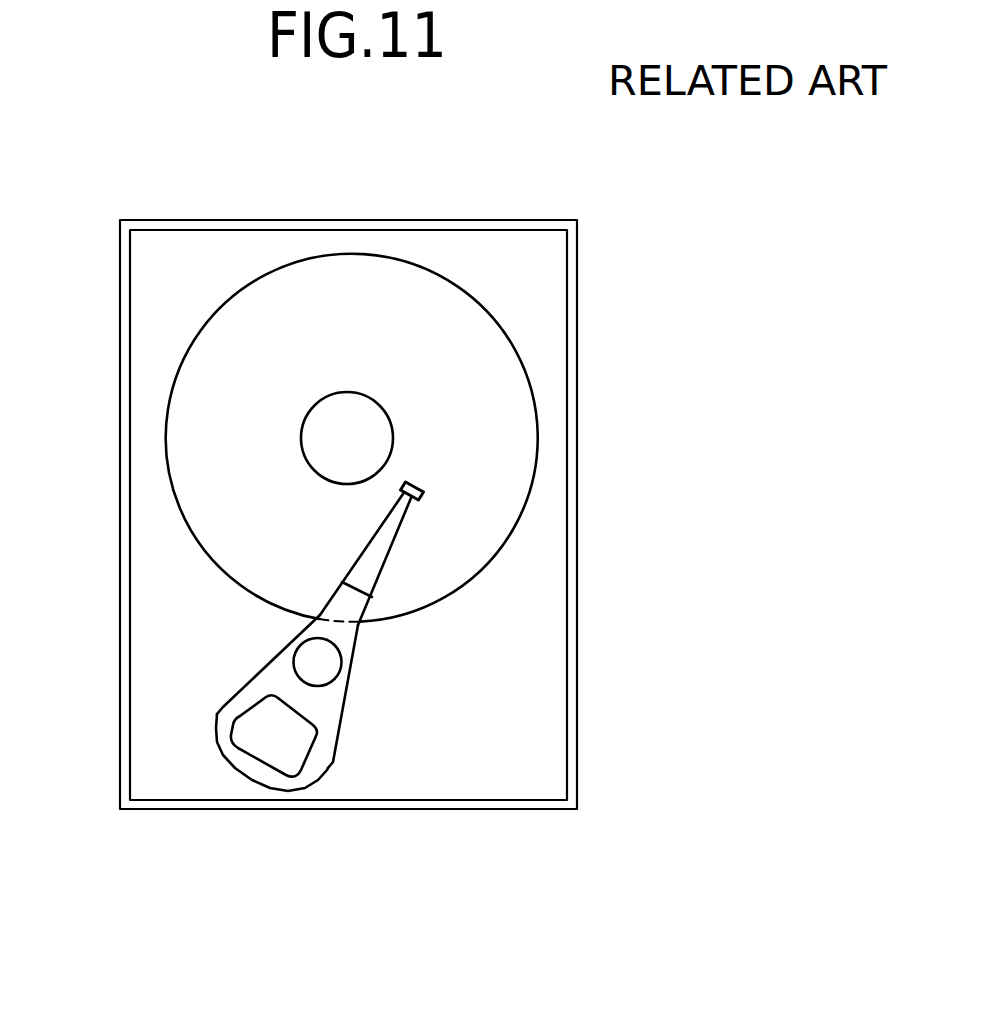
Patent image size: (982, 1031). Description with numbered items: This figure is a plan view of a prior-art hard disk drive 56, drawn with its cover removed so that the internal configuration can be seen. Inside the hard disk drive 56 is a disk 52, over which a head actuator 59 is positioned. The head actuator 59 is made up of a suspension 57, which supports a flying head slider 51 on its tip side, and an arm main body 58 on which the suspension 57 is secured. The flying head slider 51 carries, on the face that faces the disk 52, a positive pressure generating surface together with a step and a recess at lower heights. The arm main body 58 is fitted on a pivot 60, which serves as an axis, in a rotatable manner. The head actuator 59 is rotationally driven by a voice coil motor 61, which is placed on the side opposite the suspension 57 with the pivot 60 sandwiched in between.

The flying head slider 51 is at (525, 473).
The disk 52 is at (408, 438).
The hard disk drive 56 is at (463, 220).
The suspension 57 is at (489, 559).
The arm main body 58 is at (436, 703).
The head actuator 59 is at (403, 762).
The pivot 60 is at (182, 672).
The voice coil motor 61 is at (267, 798).